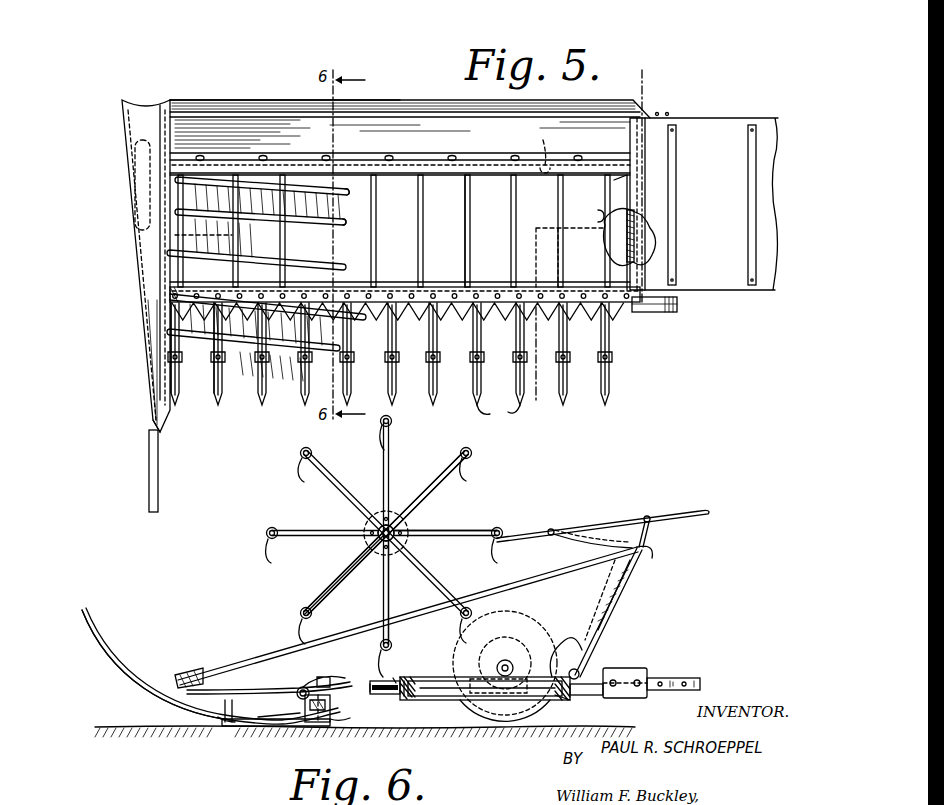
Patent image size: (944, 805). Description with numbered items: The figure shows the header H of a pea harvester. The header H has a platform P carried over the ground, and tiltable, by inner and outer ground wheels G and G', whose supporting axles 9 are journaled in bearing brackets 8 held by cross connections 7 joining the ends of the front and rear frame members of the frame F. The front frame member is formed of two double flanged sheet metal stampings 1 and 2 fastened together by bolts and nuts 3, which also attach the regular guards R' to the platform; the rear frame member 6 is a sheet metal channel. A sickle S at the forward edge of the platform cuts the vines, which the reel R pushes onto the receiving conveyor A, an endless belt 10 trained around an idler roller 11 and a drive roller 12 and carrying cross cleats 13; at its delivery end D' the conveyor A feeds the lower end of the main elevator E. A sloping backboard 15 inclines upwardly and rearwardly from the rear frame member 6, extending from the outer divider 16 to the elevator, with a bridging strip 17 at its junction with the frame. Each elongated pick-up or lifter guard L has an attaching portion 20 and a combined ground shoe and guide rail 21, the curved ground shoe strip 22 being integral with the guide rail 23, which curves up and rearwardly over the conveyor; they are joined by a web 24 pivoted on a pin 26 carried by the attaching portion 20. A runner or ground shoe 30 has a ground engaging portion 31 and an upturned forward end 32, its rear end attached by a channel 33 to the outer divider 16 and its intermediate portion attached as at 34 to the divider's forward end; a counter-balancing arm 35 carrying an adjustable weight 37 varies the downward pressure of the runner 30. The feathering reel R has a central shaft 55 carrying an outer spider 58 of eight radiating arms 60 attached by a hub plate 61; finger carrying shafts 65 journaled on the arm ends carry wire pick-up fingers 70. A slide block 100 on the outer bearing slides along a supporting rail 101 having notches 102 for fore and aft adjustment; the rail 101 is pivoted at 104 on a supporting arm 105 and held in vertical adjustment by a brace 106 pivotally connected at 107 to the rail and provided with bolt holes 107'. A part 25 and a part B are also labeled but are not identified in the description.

In FIG. 5, the front frame member stamping 1 is at (527, 283).
In FIG. 6, the front frame member stamping 1 is at (412, 675).
In FIG. 6, the front frame member stamping 2 is at (410, 702).
In FIG. 5, the bolts and nuts 3 is at (653, 297).
In FIG. 6, the bolts and nuts 3 is at (394, 681).
In FIG. 5, the rear frame member 6 is at (541, 148).
In FIG. 5, the cross connections 7 is at (673, 82).
In FIG. 6, the cross connections 7 is at (472, 668).
In FIG. 6, the bearing brackets 8 is at (543, 640).
In FIG. 6, the supporting axles 9 is at (527, 623).
In FIG. 5, the endless belt 10 is at (617, 203).
In FIG. 5, the idler roller 11 is at (218, 237).
In FIG. 5, the drive roller 12 is at (633, 233).
In FIG. 5, the cleats or strips 13 is at (280, 202).
In FIG. 5, the sloping backboard 15 is at (384, 128).
In FIG. 6, the sloping backboard 15 is at (610, 608).
In FIG. 5, the outer divider 16 is at (137, 118).
In FIG. 5, the bridging strip 17 is at (468, 163).
In FIG. 6, the bridging strip 17 is at (580, 647).
In FIG. 6, the attaching portion 20 is at (332, 700).
In FIG. 6, the combined ground shoe and guide rail 21 is at (227, 724).
In FIG. 6, the ground shoe strip 22 is at (250, 728).
In FIG. 6, the guide rail 23 is at (350, 663).
In FIG. 6, the web 24 is at (317, 688).
In FIG. 6, the block 25 is at (313, 701).
In FIG. 6, the pin 26 is at (300, 689).
In FIG. 5, the runner or ground shoe 30 is at (151, 427).
In FIG. 6, the runner or ground shoe 30 is at (123, 664).
In FIG. 6, the ground engaging portion 31 is at (307, 729).
In FIG. 5, the upturned forward end 32 is at (157, 469).
In FIG. 6, the upturned forward end 32 is at (97, 623).
In FIG. 6, the channel 33 is at (338, 724).
In FIG. 6, the attachment 34 is at (188, 696).
In FIG. 6, the counter-balancing arm 35 is at (667, 675).
In FIG. 6, the counter-balancing weight 37 is at (633, 669).
In FIG. 6, the central shaft 55 is at (394, 527).
In FIG. 6, the outer spider 58 is at (333, 488).
In FIG. 6, the radiating arms 60 is at (433, 483).
In FIG. 6, the hub plate 61 is at (367, 525).
In FIG. 5, the finger carrying shafts 65 is at (262, 184).
In FIG. 6, the finger carrying shafts 65 is at (392, 421).
In FIG. 5, the pick-up fingers or tines 70 is at (318, 204).
In FIG. 6, the pick-up fingers or tines 70 is at (383, 447).
In FIG. 6, the slide block 100 is at (391, 566).
In FIG. 6, the supporting rail 101 is at (690, 512).
In FIG. 6, the notches 102 is at (360, 567).
In FIG. 6, the pivot 104 is at (550, 529).
In FIG. 6, the supporting arm 105 is at (600, 538).
In FIG. 6, the brace element 106 is at (650, 533).
In FIG. 6, the pivot connection 107 is at (648, 505).
In FIG. 6, the bolt holes 107' is at (627, 612).
In FIG. 5, the receiving conveyor or draper A is at (479, 231).
In FIG. 5, the bracket B is at (605, 206).
In FIG. 5, the delivery end D' is at (637, 204).
In FIG. 5, the main elevator E is at (717, 117).
In FIG. 6, the frame F is at (432, 673).
In FIG. 6, the inner ground wheel G is at (575, 698).
In FIG. 5, the outer ground wheel G' is at (110, 185).
In FIG. 6, the outer ground wheel G' is at (529, 713).
In FIG. 5, the header H is at (208, 99).
In FIG. 6, the header H is at (192, 669).
In FIG. 5, the pick-up or lifter guards L is at (498, 413).
In FIG. 6, the pick-up or lifter guards L is at (282, 713).
In FIG. 5, the platform P is at (181, 291).
In FIG. 5, the reel R is at (262, 167).
In FIG. 6, the reel R is at (449, 514).
In FIG. 5, the regular guards R' is at (274, 348).
In FIG. 5, the sickle S is at (390, 354).
In FIG. 6, the sickle S is at (380, 706).